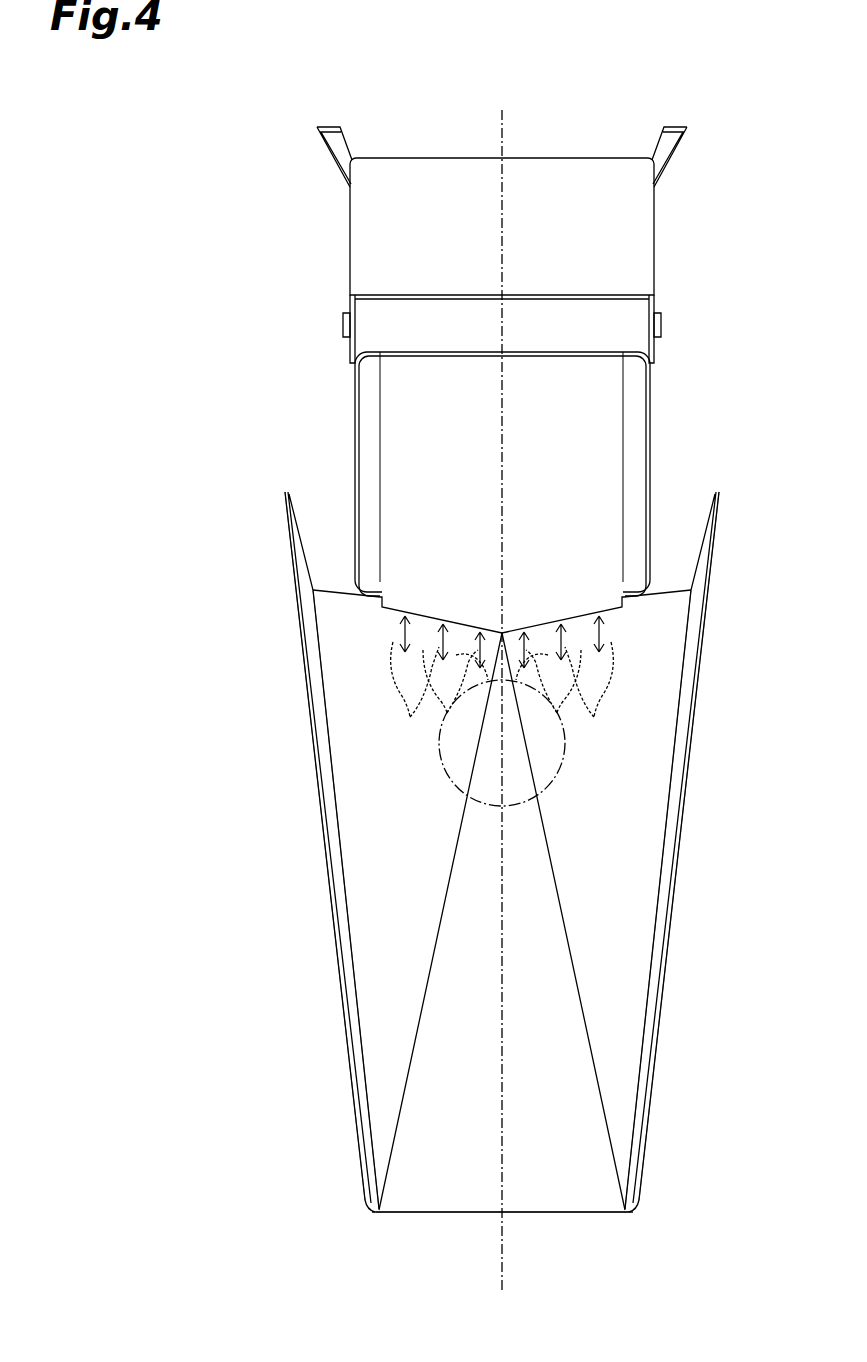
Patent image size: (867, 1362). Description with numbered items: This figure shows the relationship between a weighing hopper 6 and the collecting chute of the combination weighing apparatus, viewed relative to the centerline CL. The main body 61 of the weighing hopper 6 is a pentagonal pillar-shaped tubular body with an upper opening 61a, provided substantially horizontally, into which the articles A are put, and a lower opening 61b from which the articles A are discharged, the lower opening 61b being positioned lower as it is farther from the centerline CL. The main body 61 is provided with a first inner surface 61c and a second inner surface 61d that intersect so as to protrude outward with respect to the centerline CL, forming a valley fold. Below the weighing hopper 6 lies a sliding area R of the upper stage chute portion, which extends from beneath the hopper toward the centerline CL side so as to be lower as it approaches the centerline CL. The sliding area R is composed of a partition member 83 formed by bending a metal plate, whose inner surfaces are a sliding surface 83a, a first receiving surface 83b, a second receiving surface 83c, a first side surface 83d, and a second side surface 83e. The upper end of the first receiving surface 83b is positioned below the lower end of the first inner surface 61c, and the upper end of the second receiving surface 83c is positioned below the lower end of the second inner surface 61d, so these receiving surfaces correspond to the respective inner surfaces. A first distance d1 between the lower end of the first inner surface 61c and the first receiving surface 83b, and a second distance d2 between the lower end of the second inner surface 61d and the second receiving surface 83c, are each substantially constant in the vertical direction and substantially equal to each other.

The weighing hopper 6 is at (600, 158).
The main body 61 is at (365, 262).
The upper opening 61a is at (437, 157).
The lower opening 61b is at (645, 487).
The first inner surface 61c is at (400, 433).
The second inner surface 61d is at (595, 433).
The partition member 83 is at (678, 771).
The sliding surface 83a is at (460, 1198).
The first receiving surface 83b is at (372, 857).
The second receiving surface 83c is at (630, 857).
The first side surface 83d is at (360, 968).
The second side surface 83e is at (640, 968).
The centerline CL is at (502, 128).
The sliding area R is at (514, 1019).
The articles A is at (440, 762).
The first distance d1 is at (430, 678).
The second distance d2 is at (576, 678).